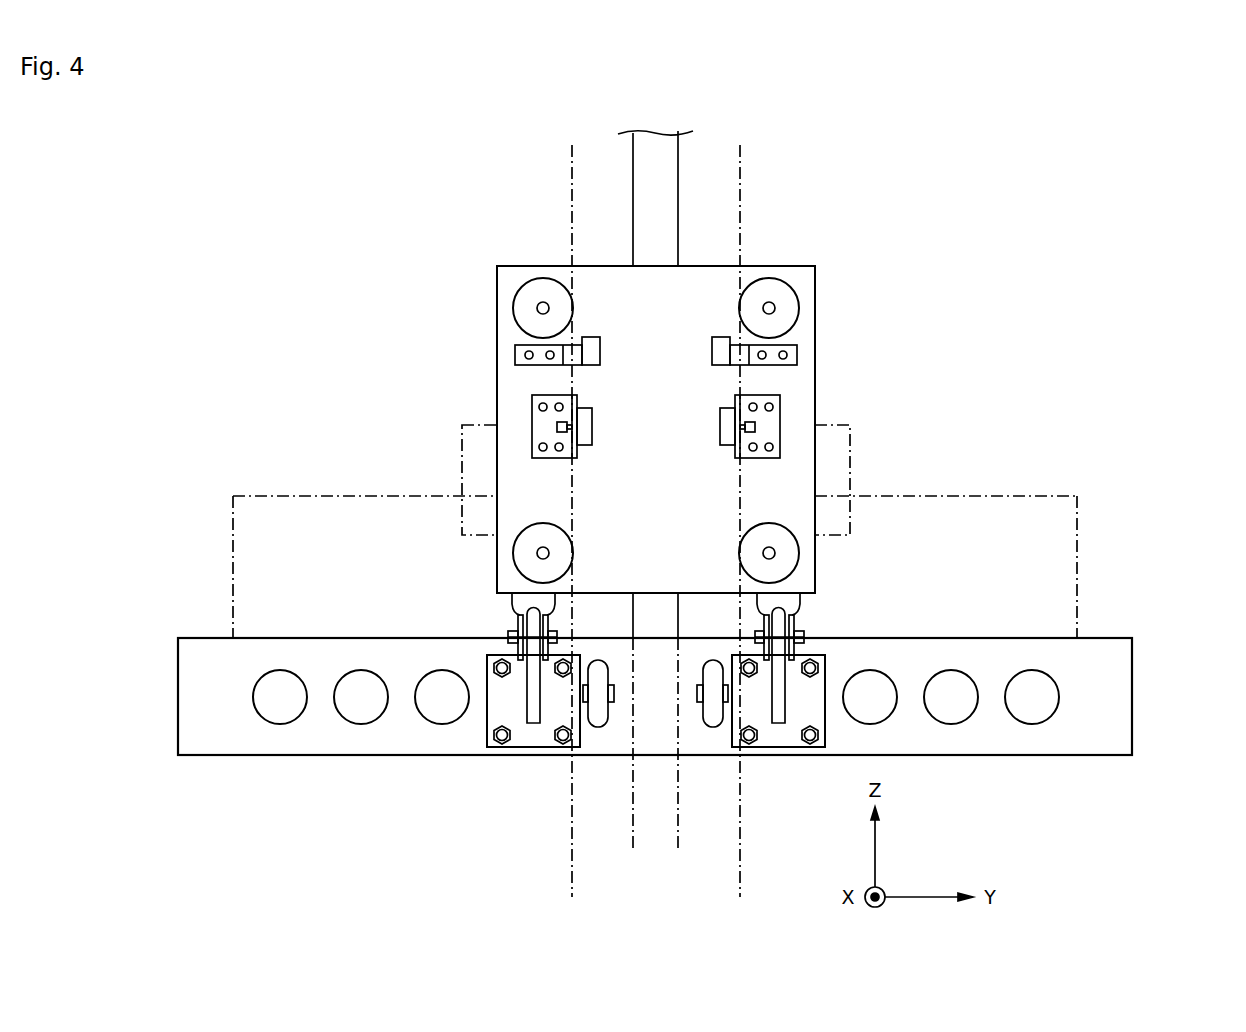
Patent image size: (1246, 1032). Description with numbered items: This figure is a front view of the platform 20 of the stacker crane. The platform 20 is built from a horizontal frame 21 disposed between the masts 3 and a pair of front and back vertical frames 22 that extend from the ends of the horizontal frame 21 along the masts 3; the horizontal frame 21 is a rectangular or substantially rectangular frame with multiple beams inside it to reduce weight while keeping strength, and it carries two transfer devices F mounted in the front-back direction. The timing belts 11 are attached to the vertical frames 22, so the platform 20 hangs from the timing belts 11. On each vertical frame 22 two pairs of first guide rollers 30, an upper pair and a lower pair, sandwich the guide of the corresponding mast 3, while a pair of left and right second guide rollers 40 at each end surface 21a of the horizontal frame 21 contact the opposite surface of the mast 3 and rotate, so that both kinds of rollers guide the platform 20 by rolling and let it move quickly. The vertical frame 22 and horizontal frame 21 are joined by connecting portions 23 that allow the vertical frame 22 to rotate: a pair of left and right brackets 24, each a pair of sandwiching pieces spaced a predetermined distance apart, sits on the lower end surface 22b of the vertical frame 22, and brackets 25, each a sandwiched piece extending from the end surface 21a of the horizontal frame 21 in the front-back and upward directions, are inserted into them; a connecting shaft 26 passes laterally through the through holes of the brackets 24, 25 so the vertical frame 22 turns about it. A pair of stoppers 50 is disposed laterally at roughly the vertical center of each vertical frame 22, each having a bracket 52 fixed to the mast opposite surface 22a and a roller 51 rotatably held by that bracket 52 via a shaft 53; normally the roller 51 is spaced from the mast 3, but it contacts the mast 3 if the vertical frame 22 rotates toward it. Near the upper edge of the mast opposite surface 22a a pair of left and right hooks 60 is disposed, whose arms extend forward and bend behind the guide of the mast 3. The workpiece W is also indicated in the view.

The mast 3 is at (740, 218).
The timing belt 11 is at (678, 190).
The platform 20 is at (697, 695).
The horizontal frame 21 is at (1132, 685).
The end surface of horizontal frame 21a is at (1070, 742).
The vertical frame 22 is at (815, 318).
The mast opposite surface of vertical frame 22a is at (706, 290).
The lower end surface of vertical frame 22b is at (613, 596).
The connecting portion 23 is at (656, 637).
The bracket 24 is at (520, 612).
The bracket 25 is at (530, 695).
The connecting shaft 26 is at (506, 637).
The first guide roller 30 is at (513, 308).
The second guide roller 40 is at (602, 728).
The stopper 50 is at (656, 392).
The roller 51 is at (584, 410).
The bracket 52 is at (547, 437).
The shaft 53 is at (560, 423).
The hook 60 is at (722, 355).
The workpiece W is at (462, 447).
The transfer device F is at (1075, 490).